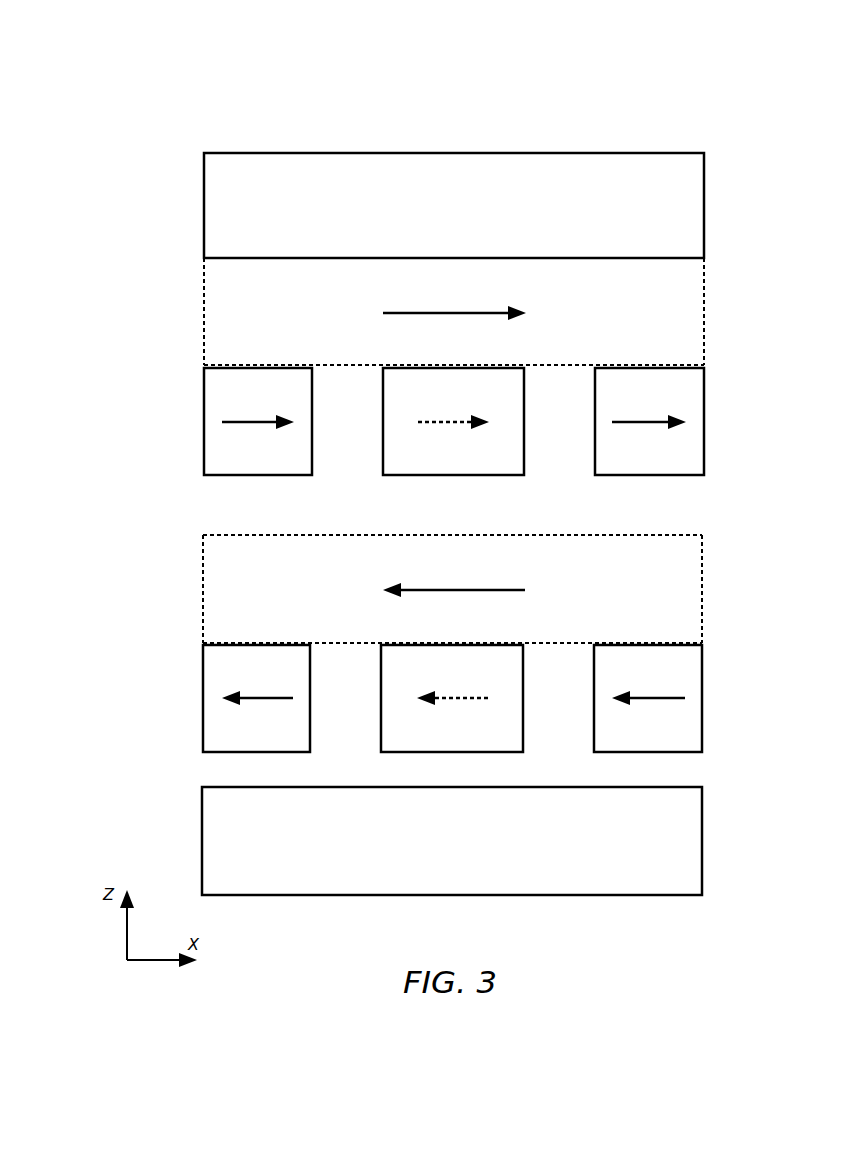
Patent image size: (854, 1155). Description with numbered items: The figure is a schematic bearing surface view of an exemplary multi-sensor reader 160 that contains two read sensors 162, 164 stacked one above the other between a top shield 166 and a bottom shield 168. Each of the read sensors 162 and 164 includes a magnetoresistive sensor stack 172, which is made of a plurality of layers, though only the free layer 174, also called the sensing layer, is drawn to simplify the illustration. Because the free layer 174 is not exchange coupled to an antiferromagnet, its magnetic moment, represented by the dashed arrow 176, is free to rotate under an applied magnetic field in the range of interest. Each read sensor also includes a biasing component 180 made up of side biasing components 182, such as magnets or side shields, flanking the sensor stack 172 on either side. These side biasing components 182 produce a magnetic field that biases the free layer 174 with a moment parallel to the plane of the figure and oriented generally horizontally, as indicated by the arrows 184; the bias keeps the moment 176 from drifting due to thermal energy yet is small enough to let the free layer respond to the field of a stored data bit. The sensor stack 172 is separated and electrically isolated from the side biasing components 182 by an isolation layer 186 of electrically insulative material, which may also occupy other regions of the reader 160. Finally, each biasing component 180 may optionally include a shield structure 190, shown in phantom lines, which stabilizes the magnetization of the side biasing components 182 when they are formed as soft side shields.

The multi-sensor reader 160 is at (160, 48).
The read sensor 162 is at (757, 535).
The read sensor 164 is at (758, 260).
The top shield 166 is at (673, 165).
The bottom shield 168 is at (662, 875).
The magnetoresistive sensor stack 172 is at (508, 467).
The free layer 174 is at (392, 457).
The magnetic moment of the free layer 176 is at (440, 424).
The biasing component 180 is at (104, 266).
The side biasing components 182 is at (212, 455).
The bias magnetic moment arrows 184 is at (243, 421).
The isolation layer 186 is at (236, 508).
The shield structure 190 is at (220, 320).